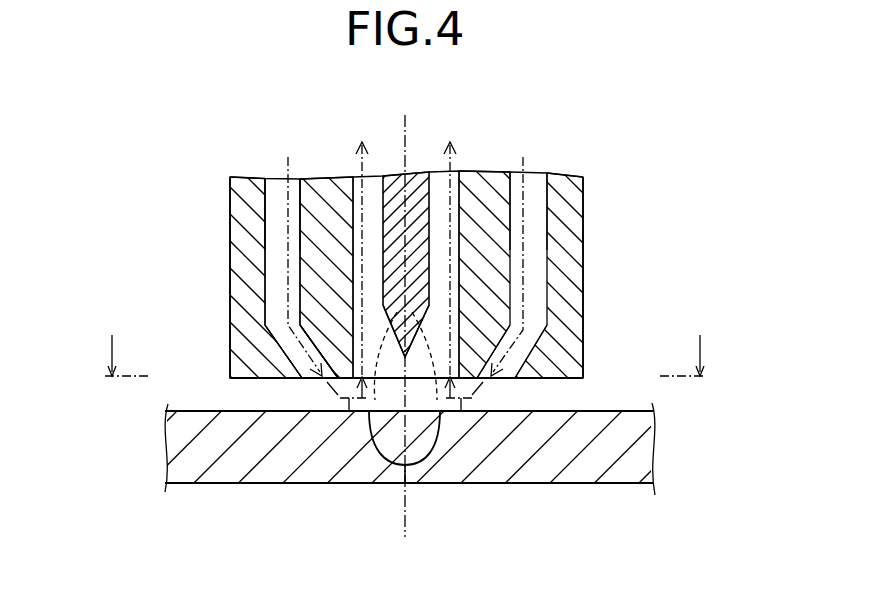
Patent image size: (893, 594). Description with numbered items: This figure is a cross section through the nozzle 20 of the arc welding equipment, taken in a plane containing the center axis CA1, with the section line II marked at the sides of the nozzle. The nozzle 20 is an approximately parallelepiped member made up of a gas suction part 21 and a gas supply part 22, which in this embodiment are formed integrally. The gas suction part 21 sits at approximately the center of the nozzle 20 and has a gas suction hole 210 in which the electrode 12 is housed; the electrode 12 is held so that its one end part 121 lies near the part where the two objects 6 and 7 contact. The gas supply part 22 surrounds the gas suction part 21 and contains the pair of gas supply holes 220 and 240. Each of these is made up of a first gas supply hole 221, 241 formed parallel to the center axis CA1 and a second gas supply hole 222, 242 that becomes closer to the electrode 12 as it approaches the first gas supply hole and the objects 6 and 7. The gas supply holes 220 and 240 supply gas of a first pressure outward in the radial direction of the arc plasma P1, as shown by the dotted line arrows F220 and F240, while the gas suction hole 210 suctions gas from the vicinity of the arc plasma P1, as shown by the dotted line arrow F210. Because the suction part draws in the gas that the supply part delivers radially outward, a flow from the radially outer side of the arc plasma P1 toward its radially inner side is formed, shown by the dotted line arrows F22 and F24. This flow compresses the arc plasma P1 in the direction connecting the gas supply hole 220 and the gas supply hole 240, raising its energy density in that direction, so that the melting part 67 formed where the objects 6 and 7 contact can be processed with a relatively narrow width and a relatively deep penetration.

The electrode 12 is at (421, 177).
The one end part of the electrode 121 is at (397, 323).
The nozzle 20 is at (590, 170).
The gas suction part 21 is at (467, 333).
The gas supply part 22 is at (262, 328).
The gas supply hole 220 is at (258, 273).
The first gas supply hole 221 is at (275, 232).
The second gas supply hole 222 is at (283, 364).
The gas suction hole 210 is at (458, 317).
The gas supply hole 240 is at (552, 256).
The first gas supply hole 241 is at (567, 203).
The second gas supply hole 242 is at (510, 362).
The object 6 is at (643, 448).
The object 7 is at (183, 463).
The melting part 67 is at (403, 448).
The center axis CA1 is at (408, 530).
The arc plasma P1 is at (375, 400).
The gas flow F22 is at (340, 398).
The gas flow F24 is at (437, 400).
The gas suction flow F210 is at (356, 165).
The gas supply flow F220 is at (288, 250).
The gas supply flow F240 is at (527, 225).
The section line II is at (405, 343).